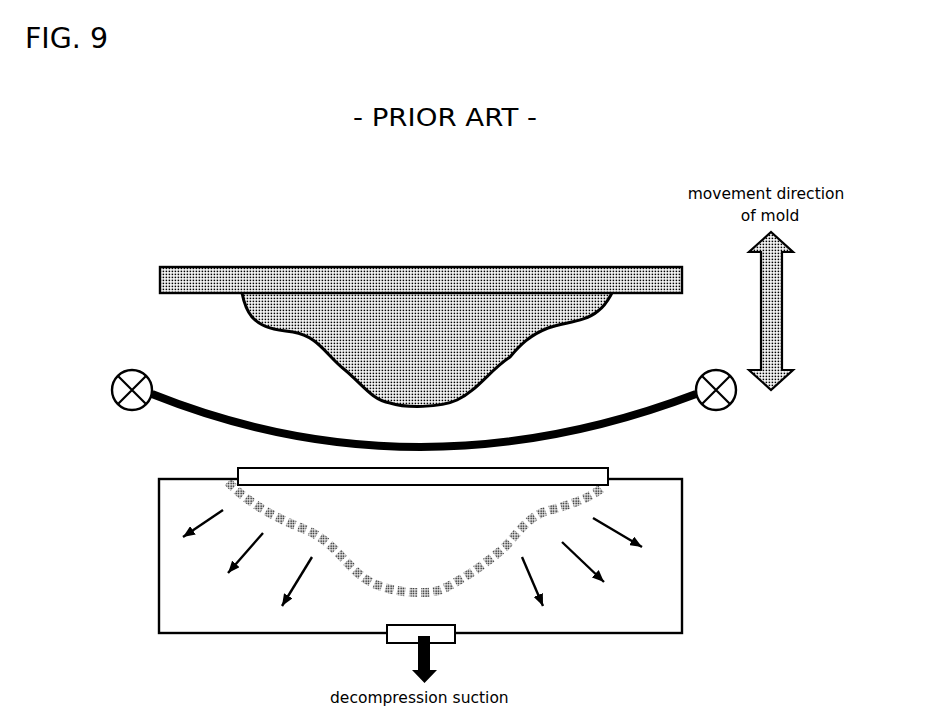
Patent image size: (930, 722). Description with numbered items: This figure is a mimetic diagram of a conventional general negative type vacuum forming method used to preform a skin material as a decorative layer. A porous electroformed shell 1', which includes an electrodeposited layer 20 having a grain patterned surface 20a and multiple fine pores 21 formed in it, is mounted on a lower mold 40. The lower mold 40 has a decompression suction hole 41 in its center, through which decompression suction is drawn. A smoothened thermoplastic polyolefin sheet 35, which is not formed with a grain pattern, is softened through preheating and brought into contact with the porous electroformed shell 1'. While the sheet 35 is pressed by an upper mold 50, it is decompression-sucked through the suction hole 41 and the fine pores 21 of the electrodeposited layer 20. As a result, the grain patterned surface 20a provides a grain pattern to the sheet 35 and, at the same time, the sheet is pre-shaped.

The upper mold 50 is at (258, 278).
The thermoplastic polyolefin (TPO) sheet 35 is at (610, 411).
The lower mold 40 is at (221, 612).
The porous electroformed shell 1' is at (483, 492).
The electrodeposited layer 20 is at (340, 562).
The grain patterned surface 20a is at (547, 515).
The fine pores 21 is at (487, 572).
The decompression suction hole 41 is at (400, 633).